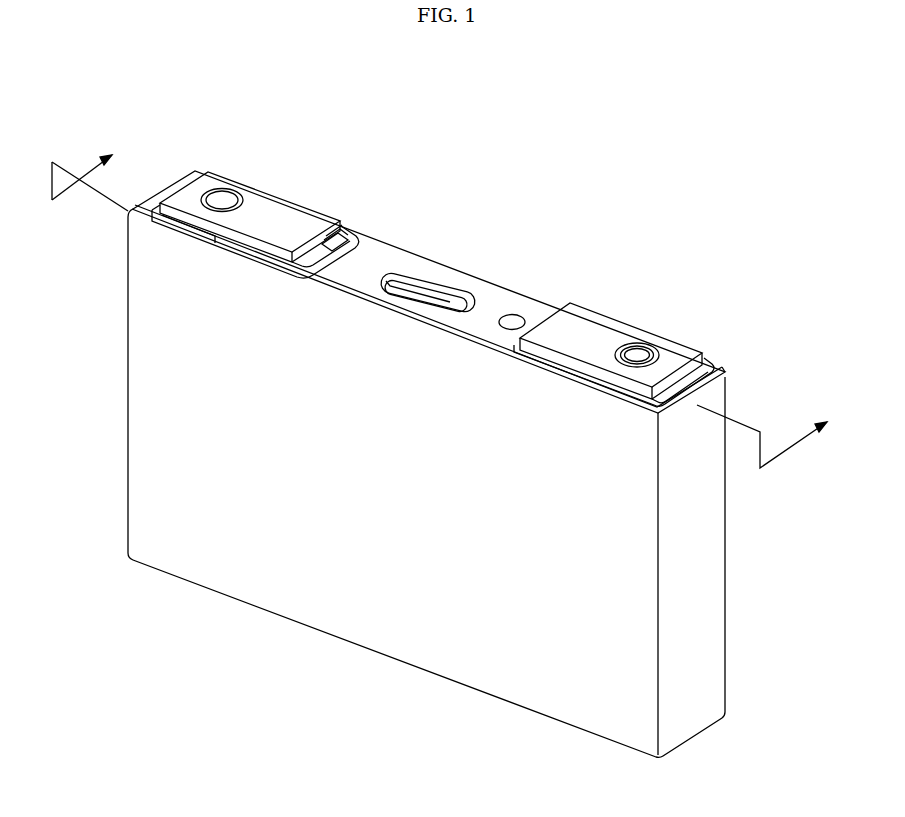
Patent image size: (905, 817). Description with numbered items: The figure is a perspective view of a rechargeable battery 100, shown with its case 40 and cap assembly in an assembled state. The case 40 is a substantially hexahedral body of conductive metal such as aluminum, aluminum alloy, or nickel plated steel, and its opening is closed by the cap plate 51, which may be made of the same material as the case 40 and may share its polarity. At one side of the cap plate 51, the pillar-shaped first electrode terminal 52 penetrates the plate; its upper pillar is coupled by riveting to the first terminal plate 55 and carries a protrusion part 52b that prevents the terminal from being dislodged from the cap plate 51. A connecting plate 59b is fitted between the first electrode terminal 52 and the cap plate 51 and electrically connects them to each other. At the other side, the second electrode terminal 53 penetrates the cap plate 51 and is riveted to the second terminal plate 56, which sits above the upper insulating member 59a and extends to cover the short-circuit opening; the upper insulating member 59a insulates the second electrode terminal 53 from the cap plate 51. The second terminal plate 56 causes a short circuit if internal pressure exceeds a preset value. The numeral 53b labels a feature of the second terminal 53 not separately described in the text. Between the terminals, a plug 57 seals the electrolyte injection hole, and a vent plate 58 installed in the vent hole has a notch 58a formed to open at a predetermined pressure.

The rechargeable battery 100 is at (173, 89).
The case 40 is at (380, 615).
The cap plate 51 is at (497, 298).
The first electrode terminal 52 is at (638, 352).
The protrusion part 52b is at (658, 348).
The second electrode terminal 53 is at (215, 197).
The negative terminal rivet/ring 53b is at (238, 194).
The first terminal plate 55 is at (596, 321).
The second terminal plate 56 is at (285, 212).
The plug 57 is at (514, 314).
The vent plate 58 is at (442, 297).
The notch 58a is at (414, 290).
The upper insulating member 59a is at (357, 224).
The connecting plate 59b is at (704, 358).